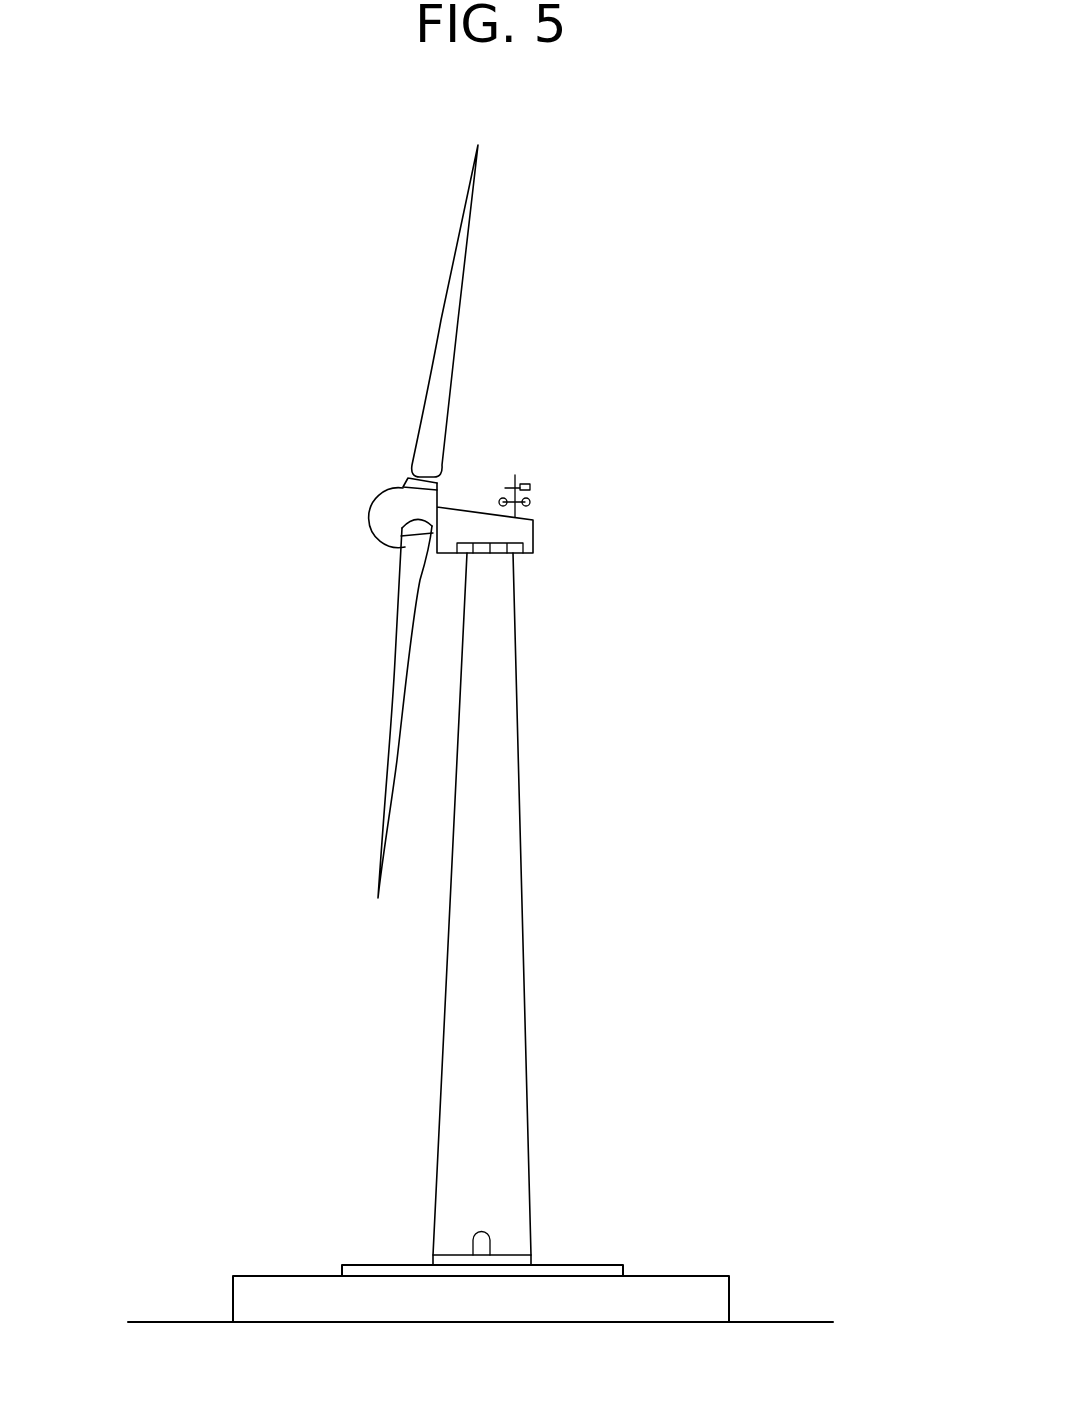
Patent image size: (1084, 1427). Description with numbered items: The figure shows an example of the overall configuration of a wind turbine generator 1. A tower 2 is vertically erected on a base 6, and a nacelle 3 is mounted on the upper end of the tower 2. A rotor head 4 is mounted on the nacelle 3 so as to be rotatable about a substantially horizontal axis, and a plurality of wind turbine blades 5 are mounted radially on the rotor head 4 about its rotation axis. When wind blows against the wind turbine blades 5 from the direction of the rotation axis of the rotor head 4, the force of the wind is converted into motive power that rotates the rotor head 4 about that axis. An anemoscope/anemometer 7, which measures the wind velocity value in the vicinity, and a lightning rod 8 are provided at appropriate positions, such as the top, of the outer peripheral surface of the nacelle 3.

The wind turbine generator 1 is at (645, 425).
The tower 2 is at (519, 753).
The nacelle 3 is at (527, 450).
The rotor head 4 is at (376, 517).
The wind turbine blade 5 is at (467, 255).
The base 6 is at (712, 1283).
The anemoscope/anemometer 7 is at (530, 501).
The lightning rod 8 is at (453, 500).